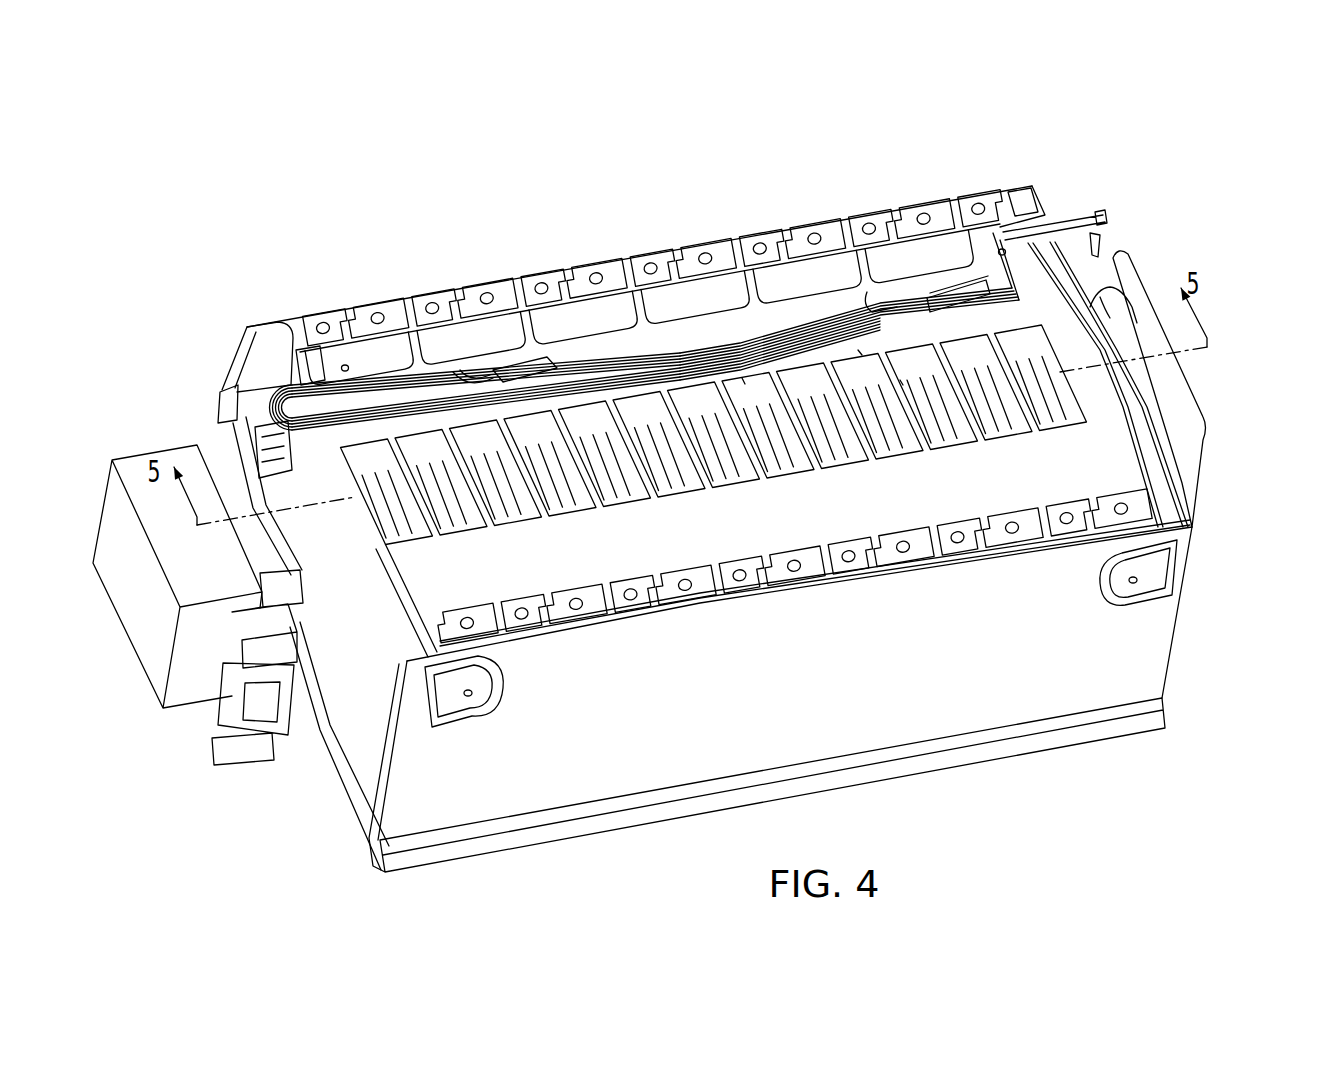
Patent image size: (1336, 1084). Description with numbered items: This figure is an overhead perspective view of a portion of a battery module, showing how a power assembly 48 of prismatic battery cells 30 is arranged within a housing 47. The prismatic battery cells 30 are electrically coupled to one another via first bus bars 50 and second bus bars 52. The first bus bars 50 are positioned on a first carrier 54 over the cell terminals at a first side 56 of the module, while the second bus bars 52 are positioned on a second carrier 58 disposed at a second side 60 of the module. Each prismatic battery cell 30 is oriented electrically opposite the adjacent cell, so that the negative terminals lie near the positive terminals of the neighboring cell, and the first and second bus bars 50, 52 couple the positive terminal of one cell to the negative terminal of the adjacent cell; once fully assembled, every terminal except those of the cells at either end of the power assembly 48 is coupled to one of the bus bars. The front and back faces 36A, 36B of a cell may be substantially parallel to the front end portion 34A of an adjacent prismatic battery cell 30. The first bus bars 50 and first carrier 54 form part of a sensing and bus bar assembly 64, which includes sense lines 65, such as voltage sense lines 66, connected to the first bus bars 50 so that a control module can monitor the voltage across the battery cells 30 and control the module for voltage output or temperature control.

The prismatic battery cell 30 is at (513, 503).
The front end portion 34A is at (742, 378).
The front face 36A is at (900, 380).
The back face 36B is at (858, 350).
The housing 47 is at (1153, 647).
The power assembly 48 is at (578, 162).
The first bus bar 50 is at (508, 293).
The second bus bar 52 is at (922, 546).
The first carrier 54 is at (817, 287).
The first side 56 is at (1063, 185).
The second carrier 58 is at (1097, 470).
The second side 60 is at (1208, 538).
The sensing and bus bar assembly 64 is at (1028, 168).
The sense line 65 is at (932, 190).
The voltage sense line 66 is at (860, 350).